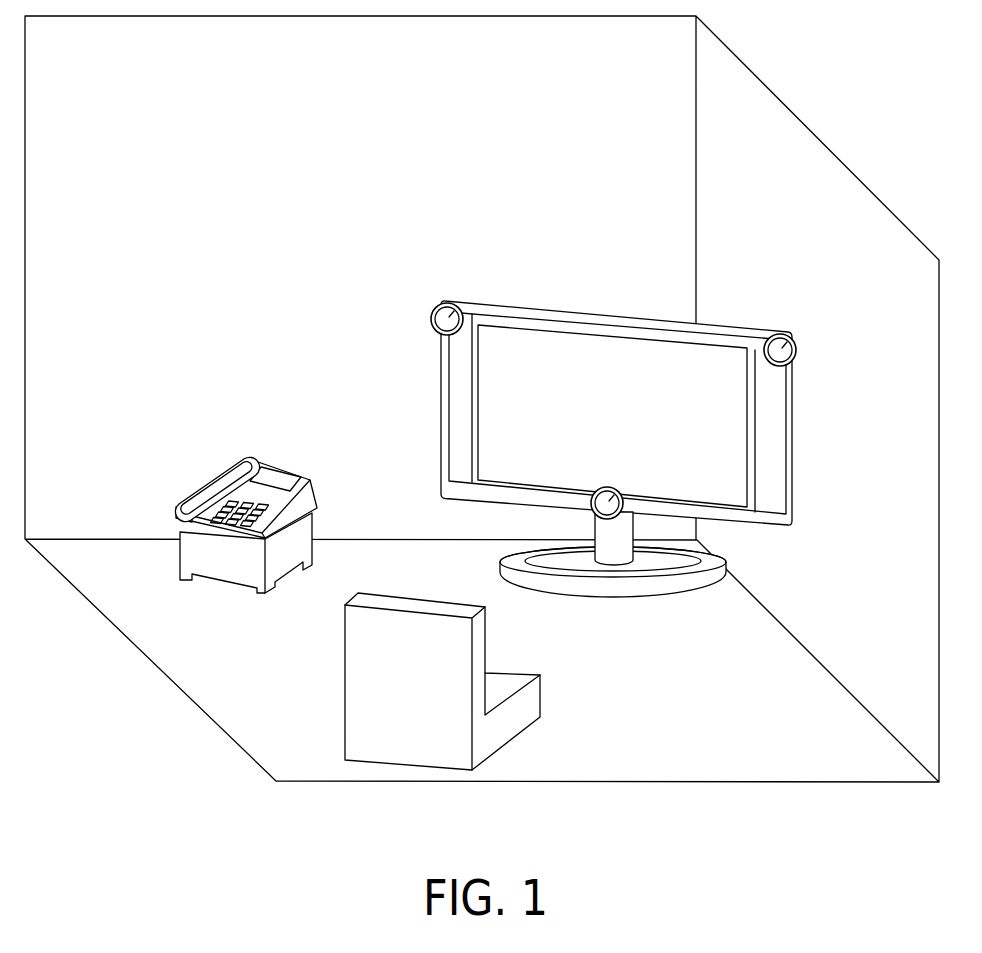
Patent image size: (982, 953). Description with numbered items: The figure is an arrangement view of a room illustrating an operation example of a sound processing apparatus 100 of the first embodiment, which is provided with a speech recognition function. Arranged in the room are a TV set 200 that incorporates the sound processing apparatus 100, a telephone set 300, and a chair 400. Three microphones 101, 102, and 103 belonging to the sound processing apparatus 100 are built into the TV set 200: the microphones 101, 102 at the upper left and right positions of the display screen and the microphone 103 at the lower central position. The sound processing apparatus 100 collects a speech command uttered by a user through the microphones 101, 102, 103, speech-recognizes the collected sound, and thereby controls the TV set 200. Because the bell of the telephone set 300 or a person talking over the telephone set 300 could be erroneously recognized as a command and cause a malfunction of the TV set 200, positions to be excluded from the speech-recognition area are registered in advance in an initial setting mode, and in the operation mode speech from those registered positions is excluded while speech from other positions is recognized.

The sound processing apparatus 100 is at (563, 402).
The microphone 101 is at (454, 303).
The microphone 102 is at (780, 334).
The microphone 103 is at (592, 513).
The TV set 200 is at (618, 313).
The telephone set 300 is at (288, 468).
The chair 400 is at (420, 606).